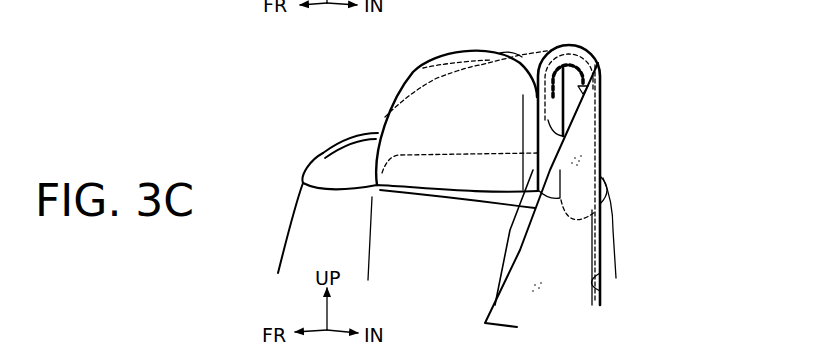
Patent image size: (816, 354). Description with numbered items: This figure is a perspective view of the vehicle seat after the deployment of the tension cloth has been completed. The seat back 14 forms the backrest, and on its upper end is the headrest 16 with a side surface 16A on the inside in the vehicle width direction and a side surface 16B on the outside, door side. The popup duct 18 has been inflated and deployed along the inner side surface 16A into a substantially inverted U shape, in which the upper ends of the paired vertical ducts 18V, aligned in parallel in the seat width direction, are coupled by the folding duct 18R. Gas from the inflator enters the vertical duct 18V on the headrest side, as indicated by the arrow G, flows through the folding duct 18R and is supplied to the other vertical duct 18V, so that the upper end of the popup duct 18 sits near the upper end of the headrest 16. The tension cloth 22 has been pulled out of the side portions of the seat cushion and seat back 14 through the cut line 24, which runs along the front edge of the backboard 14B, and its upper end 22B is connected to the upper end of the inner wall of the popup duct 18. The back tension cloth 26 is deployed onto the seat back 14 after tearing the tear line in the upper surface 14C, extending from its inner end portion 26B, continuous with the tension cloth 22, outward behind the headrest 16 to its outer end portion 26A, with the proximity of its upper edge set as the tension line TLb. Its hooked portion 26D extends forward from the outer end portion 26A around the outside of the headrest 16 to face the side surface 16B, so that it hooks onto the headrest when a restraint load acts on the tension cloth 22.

The seat back 14 is at (645, 214).
The backboard 14B is at (614, 243).
The upper surface 14C is at (328, 175).
The headrest 16 is at (470, 50).
The side surface 16A is at (527, 145).
The side surface 16B is at (369, 176).
The popup duct 18 is at (602, 108).
The folding duct 18R is at (587, 46).
The vertical duct 18V is at (596, 128).
The tension cloth 22 is at (493, 297).
The upper end 22B is at (600, 98).
The cut line 24 is at (617, 281).
The back tension cloth 26 is at (477, 92).
The outer end portion 26A is at (396, 195).
The inner end portion 26B is at (540, 52).
The hooked portion 26D is at (360, 140).
The arrow G is at (600, 66).
The tension line TLb is at (522, 56).